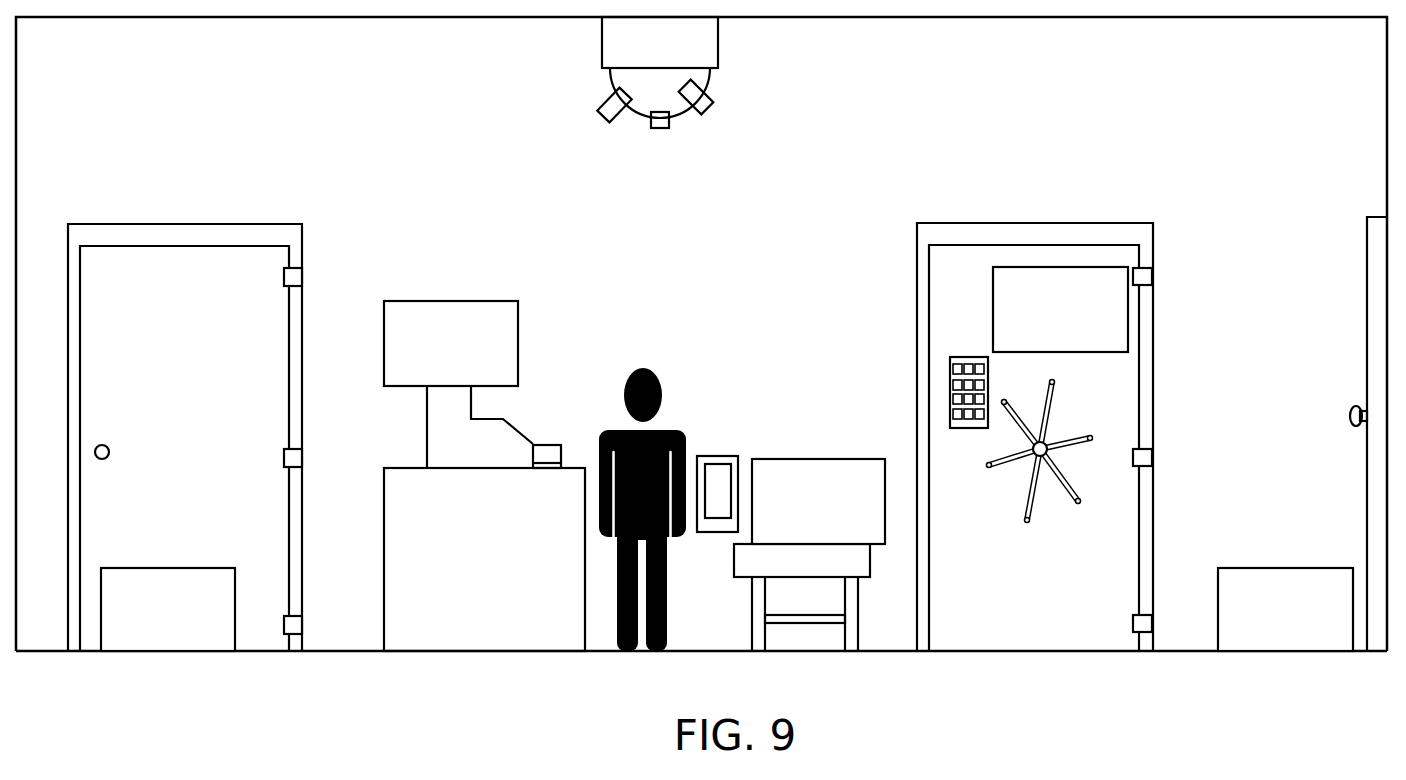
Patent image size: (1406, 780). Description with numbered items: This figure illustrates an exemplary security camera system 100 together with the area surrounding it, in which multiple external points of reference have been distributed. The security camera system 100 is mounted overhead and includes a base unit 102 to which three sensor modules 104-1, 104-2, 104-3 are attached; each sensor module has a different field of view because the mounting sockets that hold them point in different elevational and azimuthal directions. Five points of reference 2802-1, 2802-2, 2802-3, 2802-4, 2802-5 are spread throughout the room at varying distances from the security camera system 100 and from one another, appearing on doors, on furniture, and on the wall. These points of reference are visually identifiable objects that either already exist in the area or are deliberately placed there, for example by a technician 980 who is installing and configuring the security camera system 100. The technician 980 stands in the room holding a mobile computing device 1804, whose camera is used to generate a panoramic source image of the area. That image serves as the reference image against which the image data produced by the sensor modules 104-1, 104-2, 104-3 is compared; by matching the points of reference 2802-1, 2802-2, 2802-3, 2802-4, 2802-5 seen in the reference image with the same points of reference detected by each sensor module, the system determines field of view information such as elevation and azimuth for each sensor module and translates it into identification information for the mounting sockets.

The security camera system 100 is at (617, 110).
The base unit 102 is at (602, 42).
The sensor module 104-1 is at (611, 123).
The sensor module 104-2 is at (660, 128).
The sensor module 104-3 is at (712, 102).
The technician 980 is at (628, 382).
The mobile computing device 1804 is at (719, 456).
The point of reference 2802-1 is at (134, 648).
The point of reference 2802-2 is at (417, 380).
The point of reference 2802-3 is at (784, 540).
The point of reference 2802-4 is at (1026, 346).
The point of reference 2802-5 is at (1251, 647).